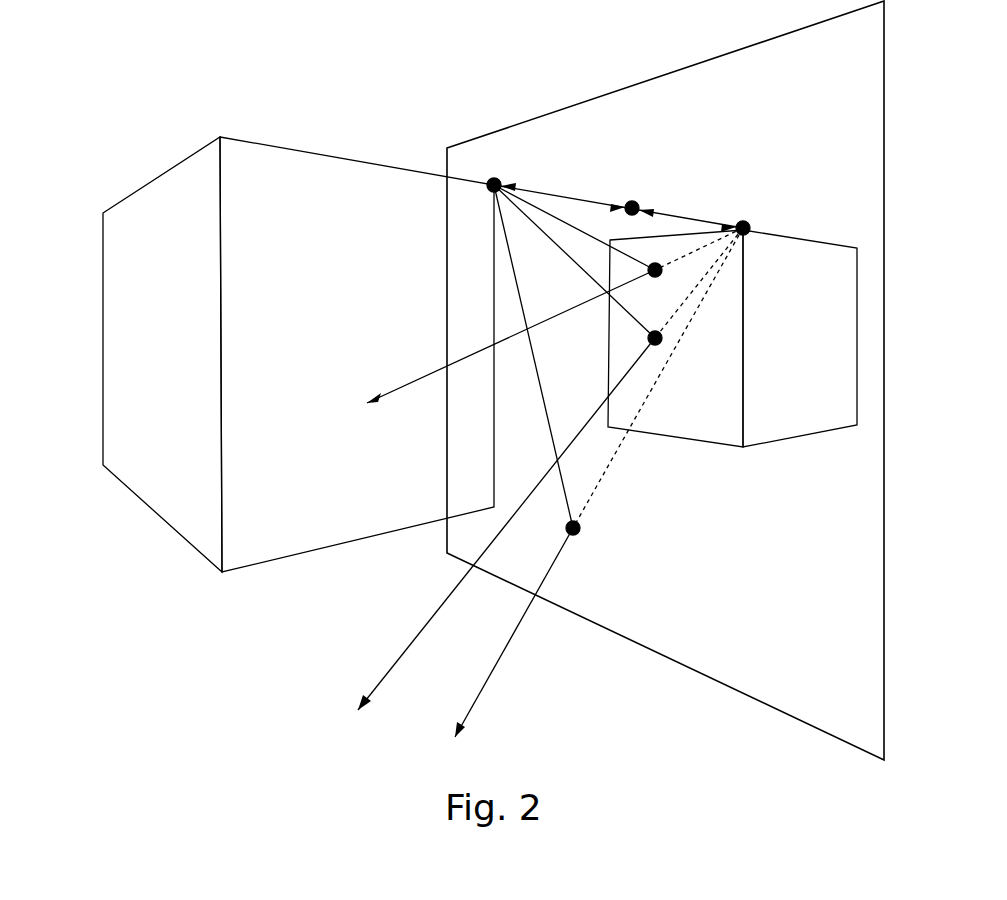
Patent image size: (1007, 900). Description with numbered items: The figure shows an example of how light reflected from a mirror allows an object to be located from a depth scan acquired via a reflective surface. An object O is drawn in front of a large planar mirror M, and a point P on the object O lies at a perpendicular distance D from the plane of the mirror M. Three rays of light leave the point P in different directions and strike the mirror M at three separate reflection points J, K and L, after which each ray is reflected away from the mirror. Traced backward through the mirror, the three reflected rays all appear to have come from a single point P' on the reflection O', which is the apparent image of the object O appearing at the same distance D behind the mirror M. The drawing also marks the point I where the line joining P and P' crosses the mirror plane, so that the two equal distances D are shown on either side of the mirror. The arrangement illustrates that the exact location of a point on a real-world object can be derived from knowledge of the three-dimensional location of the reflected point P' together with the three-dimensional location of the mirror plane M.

The mirror M is at (627, 87).
The object O is at (260, 354).
The reflection O' is at (778, 338).
The point P is at (476, 131).
The reflected point P' is at (770, 190).
The intersection point with mirror plane I is at (632, 204).
The perpendicular distance D is at (618, 201).
The reflection point J is at (657, 276).
The reflection point K is at (657, 345).
The reflection point L is at (576, 534).